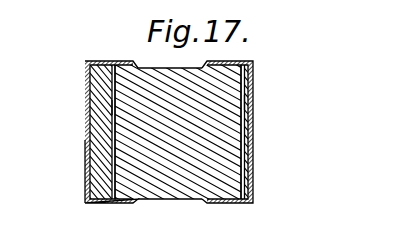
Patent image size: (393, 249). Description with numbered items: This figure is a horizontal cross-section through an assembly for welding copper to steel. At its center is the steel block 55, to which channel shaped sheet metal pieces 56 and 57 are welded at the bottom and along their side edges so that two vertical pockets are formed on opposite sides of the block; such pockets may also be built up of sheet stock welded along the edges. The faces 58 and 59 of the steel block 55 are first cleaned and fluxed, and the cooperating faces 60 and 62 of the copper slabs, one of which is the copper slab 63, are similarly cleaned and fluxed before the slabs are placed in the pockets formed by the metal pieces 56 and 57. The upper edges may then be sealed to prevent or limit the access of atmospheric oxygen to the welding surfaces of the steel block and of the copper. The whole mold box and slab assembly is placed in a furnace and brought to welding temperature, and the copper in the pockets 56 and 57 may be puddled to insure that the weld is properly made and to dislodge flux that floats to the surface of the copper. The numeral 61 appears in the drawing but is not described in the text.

The steel block 55 is at (180, 196).
The channel shaped sheet metal piece 56 is at (254, 127).
The channel shaped sheet metal piece 57 is at (87, 139).
The face 58 is at (213, 106).
The face 59 is at (122, 100).
The cooperating face 60 is at (224, 86).
The casing wall 61 is at (88, 173).
The cooperating face 62 is at (116, 87).
The copper slab 63 is at (233, 153).